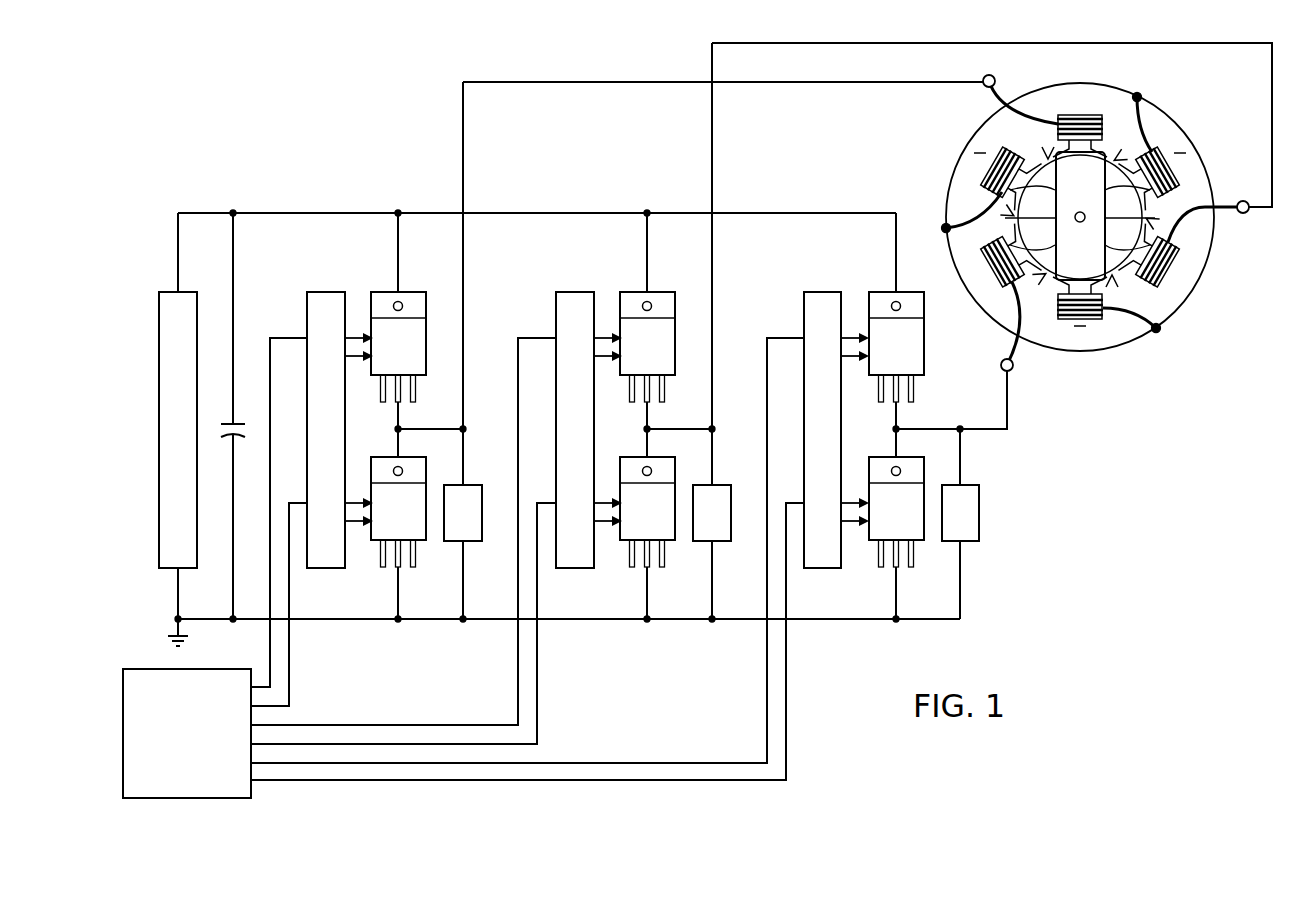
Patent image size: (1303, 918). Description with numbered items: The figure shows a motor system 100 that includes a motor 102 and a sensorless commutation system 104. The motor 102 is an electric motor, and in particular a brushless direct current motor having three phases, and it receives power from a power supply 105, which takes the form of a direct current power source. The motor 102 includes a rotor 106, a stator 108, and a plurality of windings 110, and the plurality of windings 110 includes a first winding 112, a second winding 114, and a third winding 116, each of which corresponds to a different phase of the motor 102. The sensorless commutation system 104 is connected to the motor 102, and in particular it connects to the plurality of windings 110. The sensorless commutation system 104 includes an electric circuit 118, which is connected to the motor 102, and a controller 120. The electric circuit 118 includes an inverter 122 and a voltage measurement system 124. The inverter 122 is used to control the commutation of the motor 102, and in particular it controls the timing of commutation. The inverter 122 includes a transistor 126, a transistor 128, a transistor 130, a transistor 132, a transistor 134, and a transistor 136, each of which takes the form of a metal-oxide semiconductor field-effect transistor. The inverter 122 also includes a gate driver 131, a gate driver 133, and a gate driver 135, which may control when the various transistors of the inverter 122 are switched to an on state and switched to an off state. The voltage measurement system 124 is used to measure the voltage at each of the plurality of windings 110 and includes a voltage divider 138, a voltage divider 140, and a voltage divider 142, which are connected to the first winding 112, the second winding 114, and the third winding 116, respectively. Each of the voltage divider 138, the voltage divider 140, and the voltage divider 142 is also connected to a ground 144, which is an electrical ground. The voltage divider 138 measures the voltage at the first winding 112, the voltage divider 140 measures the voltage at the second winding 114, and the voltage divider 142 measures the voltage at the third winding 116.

The motor system 100 is at (230, 96).
The motor 102 is at (1154, 355).
The sensorless commutation system 104 is at (355, 190).
The power supply 105 is at (158, 436).
The rotor 106 is at (1178, 204).
The stator 108 is at (1095, 334).
The plurality of windings 110 is at (1178, 325).
The first winding 112 is at (1094, 118).
The second winding 114 is at (995, 158).
The third winding 116 is at (1166, 156).
The electric circuit 118 is at (281, 283).
The controller 120 is at (170, 760).
The inverter 122 is at (666, 285).
The voltage measurement system 124 is at (472, 570).
The transistor 126 is at (384, 291).
The transistor 128 is at (384, 456).
The transistor 130 is at (634, 291).
The gate driver 131 is at (320, 291).
The transistor 132 is at (634, 456).
The gate driver 133 is at (568, 291).
The transistor 134 is at (886, 291).
The gate driver 135 is at (822, 291).
The transistor 136 is at (882, 456).
The voltage divider 138 is at (454, 545).
The voltage divider 140 is at (722, 545).
The voltage divider 142 is at (981, 511).
The ground 144 is at (170, 641).